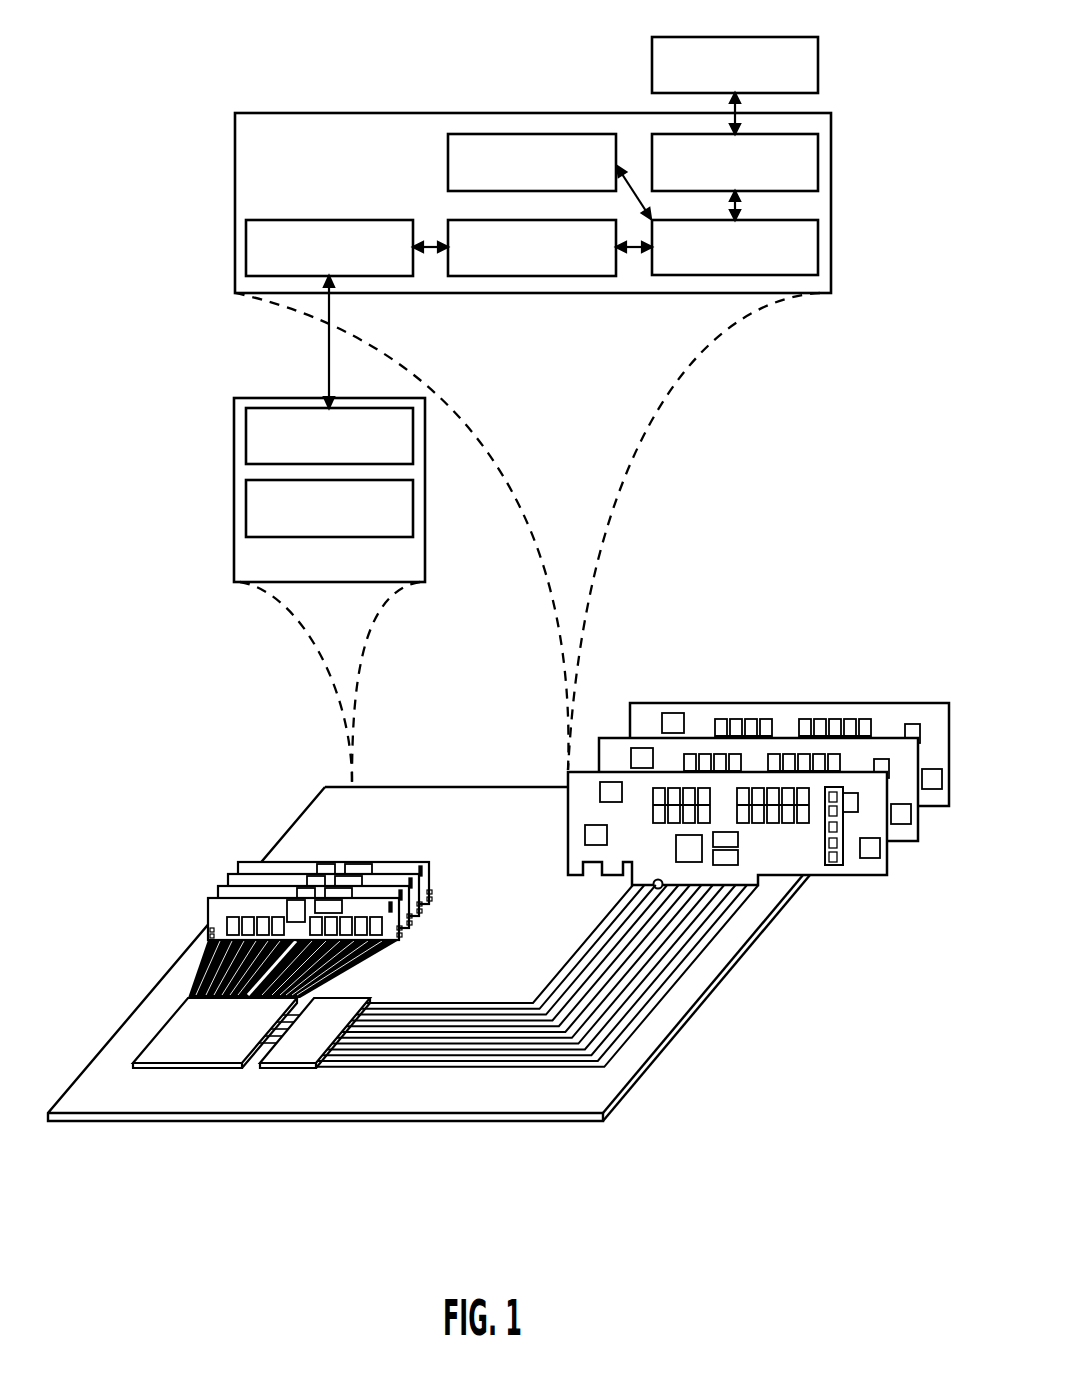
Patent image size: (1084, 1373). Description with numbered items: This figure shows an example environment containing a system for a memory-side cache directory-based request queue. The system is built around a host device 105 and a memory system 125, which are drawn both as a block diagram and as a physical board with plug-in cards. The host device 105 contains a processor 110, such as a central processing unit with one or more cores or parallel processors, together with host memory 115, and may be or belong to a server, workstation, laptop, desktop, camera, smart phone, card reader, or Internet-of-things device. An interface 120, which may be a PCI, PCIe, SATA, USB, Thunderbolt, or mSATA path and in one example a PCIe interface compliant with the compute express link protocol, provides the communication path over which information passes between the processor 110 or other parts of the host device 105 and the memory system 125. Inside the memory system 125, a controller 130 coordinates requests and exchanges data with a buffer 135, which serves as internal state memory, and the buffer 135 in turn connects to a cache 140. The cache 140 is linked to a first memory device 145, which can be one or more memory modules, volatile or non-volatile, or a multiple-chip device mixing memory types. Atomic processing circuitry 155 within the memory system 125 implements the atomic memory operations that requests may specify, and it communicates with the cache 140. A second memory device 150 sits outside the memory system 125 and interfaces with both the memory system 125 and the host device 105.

The host device 105 is at (273, 398).
The processor 110 is at (246, 505).
The host memory 115 is at (246, 432).
The interface 120 is at (285, 1068).
The memory system 125 is at (235, 200).
The controller 130 is at (330, 220).
The buffer 135 is at (462, 220).
The cache 140 is at (818, 245).
The first memory device 145 is at (818, 160).
The second memory device 150 is at (735, 37).
The atomic processing circuitry 155 is at (448, 160).